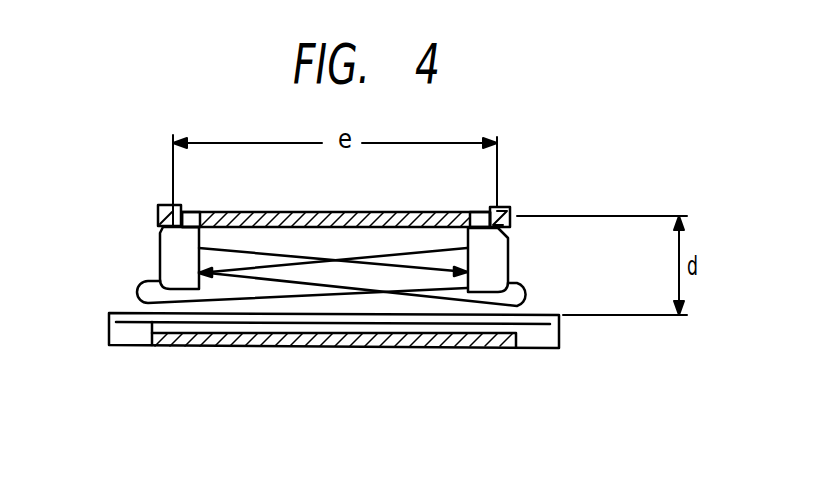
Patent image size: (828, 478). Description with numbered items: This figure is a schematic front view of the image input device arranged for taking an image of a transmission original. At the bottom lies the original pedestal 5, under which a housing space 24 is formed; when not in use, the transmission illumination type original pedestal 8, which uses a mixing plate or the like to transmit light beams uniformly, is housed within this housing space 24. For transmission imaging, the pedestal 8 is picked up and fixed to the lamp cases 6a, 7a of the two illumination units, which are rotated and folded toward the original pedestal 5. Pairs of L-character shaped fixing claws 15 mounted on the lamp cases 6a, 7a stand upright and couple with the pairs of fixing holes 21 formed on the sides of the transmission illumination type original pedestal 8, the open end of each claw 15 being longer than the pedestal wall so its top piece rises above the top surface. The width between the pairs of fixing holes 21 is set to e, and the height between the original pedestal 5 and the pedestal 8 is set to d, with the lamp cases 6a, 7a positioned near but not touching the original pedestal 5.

The original pedestal 5 is at (130, 336).
The lamp case 6a is at (160, 238).
The lamp case 7a is at (494, 266).
The transmission illumination type original pedestal 8 is at (411, 219).
The L-character shaped fixing claw 15 is at (160, 206).
The fixing hole 21 is at (196, 213).
The housing space 24 is at (482, 342).